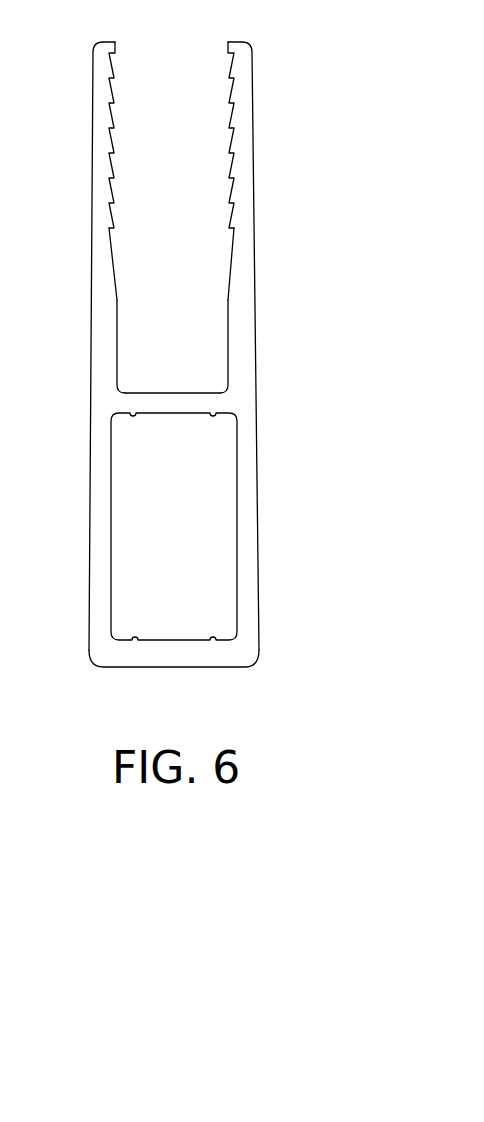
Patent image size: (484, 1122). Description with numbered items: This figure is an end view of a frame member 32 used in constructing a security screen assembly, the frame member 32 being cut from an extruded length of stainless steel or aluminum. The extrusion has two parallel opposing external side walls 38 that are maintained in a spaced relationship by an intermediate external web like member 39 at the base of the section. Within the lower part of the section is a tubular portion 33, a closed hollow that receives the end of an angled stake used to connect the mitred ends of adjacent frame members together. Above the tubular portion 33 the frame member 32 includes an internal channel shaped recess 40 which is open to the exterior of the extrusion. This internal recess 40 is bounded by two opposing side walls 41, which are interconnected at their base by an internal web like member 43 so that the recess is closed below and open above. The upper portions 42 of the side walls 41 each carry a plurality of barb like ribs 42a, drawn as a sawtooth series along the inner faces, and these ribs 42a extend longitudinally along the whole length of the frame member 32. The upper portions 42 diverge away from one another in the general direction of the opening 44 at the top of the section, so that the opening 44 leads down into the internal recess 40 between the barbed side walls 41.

The frame member 32 is at (226, 365).
The tubular portion 33 is at (208, 547).
The external side wall 38 is at (257, 351).
The intermediate external web like member 39 is at (147, 652).
The internal channel shaped recess 40 is at (193, 333).
The side wall 41 is at (112, 228).
The upper portion 42 is at (230, 145).
The barb like rib 42a is at (142, 126).
The internal web like member 43 is at (193, 406).
The opening 44 is at (185, 65).